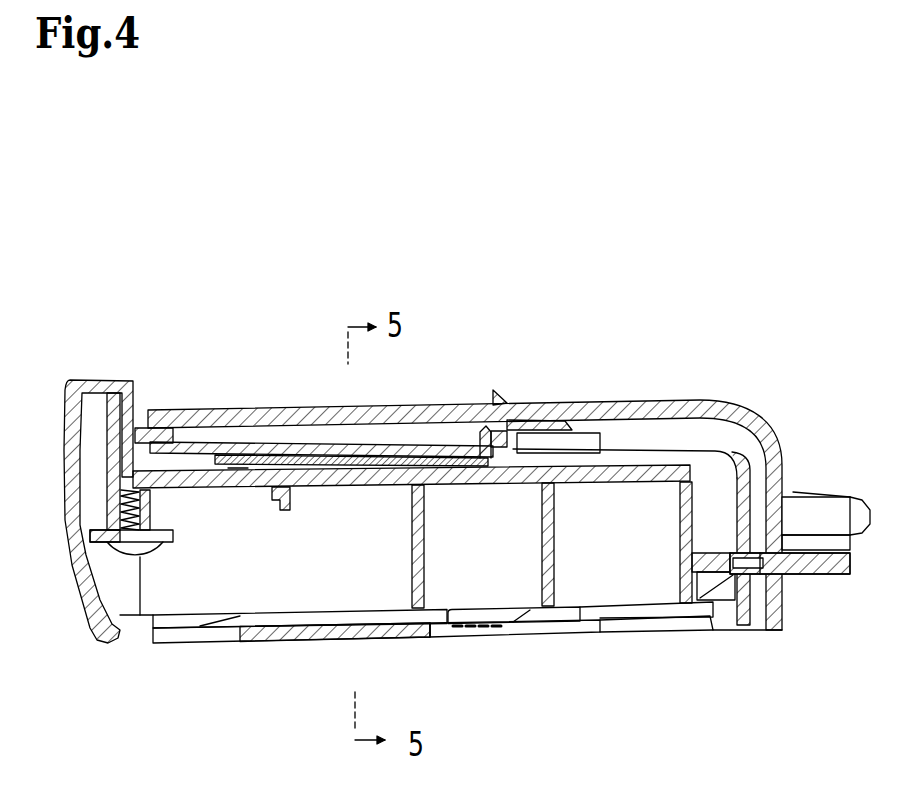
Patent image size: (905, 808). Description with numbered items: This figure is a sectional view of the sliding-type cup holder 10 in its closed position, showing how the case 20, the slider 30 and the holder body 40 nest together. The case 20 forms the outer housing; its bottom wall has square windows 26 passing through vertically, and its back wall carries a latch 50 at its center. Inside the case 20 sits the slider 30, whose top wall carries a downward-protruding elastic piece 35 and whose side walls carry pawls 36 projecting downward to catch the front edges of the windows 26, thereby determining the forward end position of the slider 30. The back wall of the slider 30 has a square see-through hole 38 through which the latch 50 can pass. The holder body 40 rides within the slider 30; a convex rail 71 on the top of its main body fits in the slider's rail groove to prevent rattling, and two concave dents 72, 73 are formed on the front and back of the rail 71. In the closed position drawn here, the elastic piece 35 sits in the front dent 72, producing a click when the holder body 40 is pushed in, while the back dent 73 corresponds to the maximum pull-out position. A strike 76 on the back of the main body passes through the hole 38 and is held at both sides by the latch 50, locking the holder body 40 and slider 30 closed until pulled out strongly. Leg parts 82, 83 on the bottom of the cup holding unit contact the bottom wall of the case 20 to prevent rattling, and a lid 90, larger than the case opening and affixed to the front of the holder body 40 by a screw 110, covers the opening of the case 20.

The cup holder 10 is at (206, 222).
The case 20 is at (687, 401).
The square windows 26 is at (665, 622).
The slider 30 is at (338, 446).
The elastic piece 35 is at (238, 458).
The pawls 36 is at (715, 626).
The see-through hole 38 is at (752, 577).
The holder body 40 is at (563, 470).
The latch 50 is at (813, 576).
The rail 71 is at (284, 500).
The front dent 72 is at (238, 470).
The back dent 73 is at (660, 470).
The strike 76 is at (704, 551).
The leg part 82 is at (183, 620).
The leg part 83 is at (493, 618).
The lid 90 is at (88, 488).
The screw 110 is at (123, 558).